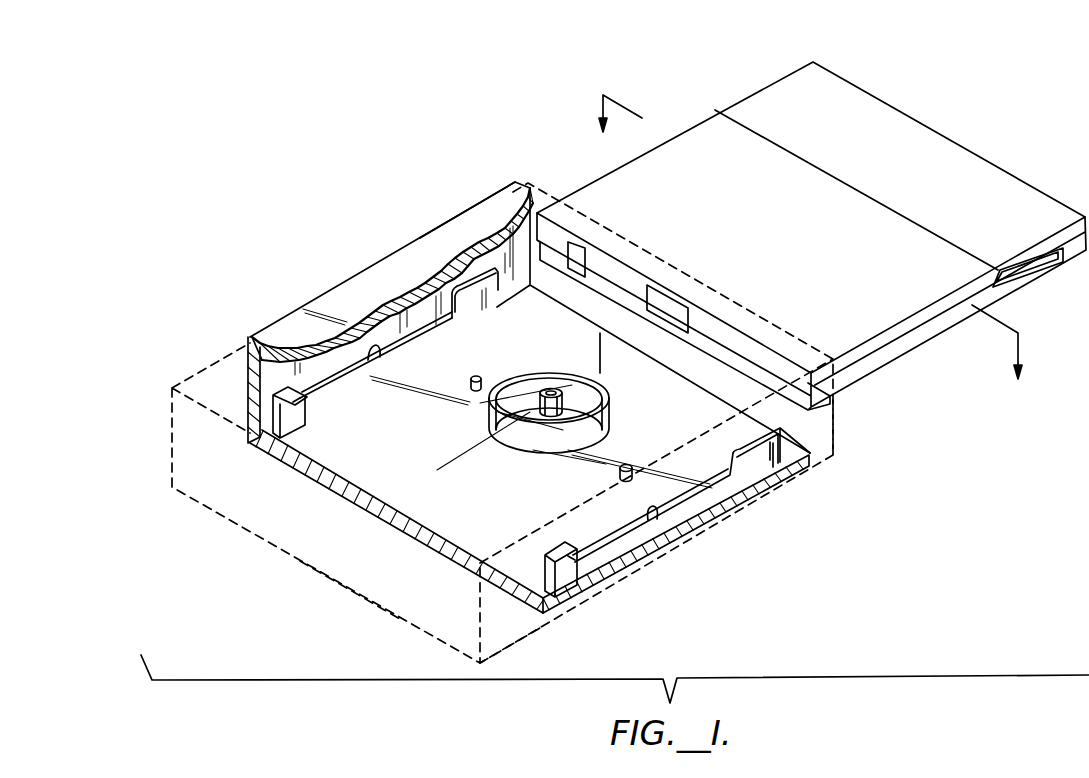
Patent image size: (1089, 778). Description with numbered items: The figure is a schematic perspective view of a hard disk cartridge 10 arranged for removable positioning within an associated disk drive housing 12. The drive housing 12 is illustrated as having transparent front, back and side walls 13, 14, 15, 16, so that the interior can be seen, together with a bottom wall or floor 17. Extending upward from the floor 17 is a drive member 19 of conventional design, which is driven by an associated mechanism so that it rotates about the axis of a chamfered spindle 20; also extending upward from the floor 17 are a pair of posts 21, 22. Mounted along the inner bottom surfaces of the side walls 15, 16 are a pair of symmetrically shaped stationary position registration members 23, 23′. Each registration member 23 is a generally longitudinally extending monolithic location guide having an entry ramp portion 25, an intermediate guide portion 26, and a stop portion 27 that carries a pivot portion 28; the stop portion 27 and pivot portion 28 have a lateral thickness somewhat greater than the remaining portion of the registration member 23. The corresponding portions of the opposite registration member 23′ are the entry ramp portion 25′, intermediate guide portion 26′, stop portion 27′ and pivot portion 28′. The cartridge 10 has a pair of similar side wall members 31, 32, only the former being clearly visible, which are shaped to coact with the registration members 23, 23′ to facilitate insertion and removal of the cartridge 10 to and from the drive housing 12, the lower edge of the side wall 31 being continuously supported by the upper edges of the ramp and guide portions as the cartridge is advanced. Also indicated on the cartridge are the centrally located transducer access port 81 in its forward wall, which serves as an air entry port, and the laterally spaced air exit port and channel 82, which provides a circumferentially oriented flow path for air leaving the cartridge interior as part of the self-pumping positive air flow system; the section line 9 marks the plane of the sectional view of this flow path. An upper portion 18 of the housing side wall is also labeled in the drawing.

The section line 9- 9 is at (808, 248).
The hard disk cartridge 10 is at (680, 134).
The disk drive housing 12 is at (363, 268).
The front wall 13 is at (818, 430).
The back wall 14 is at (301, 551).
The side wall 15 is at (512, 623).
The side wall 16 is at (263, 337).
The bottom wall or floor 17 is at (437, 610).
The top portion of side wall 18 is at (487, 217).
The drive member 19 is at (609, 393).
The chamfered spindle 20 is at (567, 400).
The post 21 is at (634, 474).
The post 22 is at (480, 383).
The position registration member 23 is at (677, 517).
The position registration member 23′ is at (429, 338).
The entry ramp portion 25 is at (763, 460).
The entry ramp portion 25′ is at (481, 293).
The intermediate guide portion 26 is at (655, 520).
The intermediate guide portion 26′ is at (383, 352).
The stop portion 27 is at (565, 572).
The stop portion 27′ is at (290, 418).
The pivot portion 28 is at (570, 550).
The pivot portion 28′ is at (297, 388).
The side wall member 31 is at (918, 310).
The side wall member 32 is at (765, 83).
The transducer access port 81 is at (681, 310).
The air exit port and channel 82 is at (578, 245).